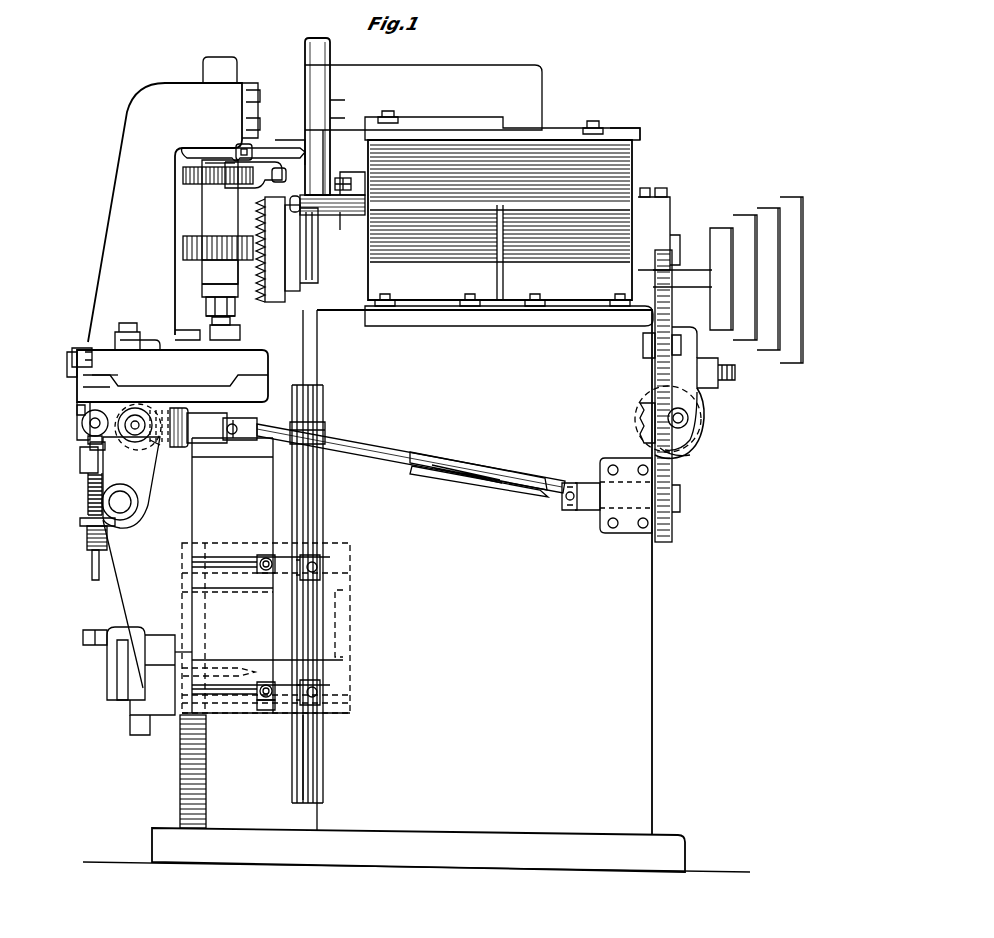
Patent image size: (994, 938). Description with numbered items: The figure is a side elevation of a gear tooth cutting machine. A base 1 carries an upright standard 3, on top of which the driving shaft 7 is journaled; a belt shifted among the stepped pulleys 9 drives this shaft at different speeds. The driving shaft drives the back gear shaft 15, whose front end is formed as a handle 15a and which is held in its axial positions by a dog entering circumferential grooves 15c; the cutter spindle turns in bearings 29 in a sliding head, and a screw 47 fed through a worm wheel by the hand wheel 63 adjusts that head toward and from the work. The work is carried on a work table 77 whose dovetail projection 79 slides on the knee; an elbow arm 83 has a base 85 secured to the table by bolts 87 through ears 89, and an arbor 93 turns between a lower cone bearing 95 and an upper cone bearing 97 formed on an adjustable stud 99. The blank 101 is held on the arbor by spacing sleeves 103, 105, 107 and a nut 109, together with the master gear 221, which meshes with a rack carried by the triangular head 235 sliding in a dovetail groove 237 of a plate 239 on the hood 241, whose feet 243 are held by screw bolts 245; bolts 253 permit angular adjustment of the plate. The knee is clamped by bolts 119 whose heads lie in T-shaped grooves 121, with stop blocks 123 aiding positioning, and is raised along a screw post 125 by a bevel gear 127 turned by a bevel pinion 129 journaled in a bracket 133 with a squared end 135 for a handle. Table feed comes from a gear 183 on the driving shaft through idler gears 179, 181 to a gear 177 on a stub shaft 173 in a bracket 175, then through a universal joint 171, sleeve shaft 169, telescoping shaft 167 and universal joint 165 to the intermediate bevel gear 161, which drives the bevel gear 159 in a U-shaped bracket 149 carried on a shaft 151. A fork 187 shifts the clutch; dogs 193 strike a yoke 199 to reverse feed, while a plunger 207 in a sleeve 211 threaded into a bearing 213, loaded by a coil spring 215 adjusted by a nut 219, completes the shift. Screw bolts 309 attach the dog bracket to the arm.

The base 1 is at (668, 842).
The standard 3 is at (652, 742).
The driving shaft 7 is at (688, 278).
The stepped pulleys 9 is at (786, 200).
The back gear shaft 15 is at (287, 249).
The handle 15a is at (296, 216).
The circumferential grooves 15c is at (350, 222).
The bearings 29 is at (345, 190).
The screw 47 is at (735, 373).
The hand wheel 63 is at (706, 432).
The work table 77 is at (97, 358).
The dovetail projection 79 is at (102, 386).
The elbow arm 83 is at (118, 185).
The base 85 is at (172, 348).
The bolts 87 is at (125, 335).
The ears 89 is at (115, 340).
The arbor 93 is at (235, 328).
The cone bearing 95 is at (240, 345).
The cone bearing 97 is at (190, 155).
The stud 99 is at (203, 68).
The blank 101 is at (183, 248).
The spacing sleeve 103 is at (215, 205).
The spacing sleeve 105 is at (210, 272).
The spacing sleeve 107 is at (208, 290).
The nut 109 is at (206, 308).
The bolts 119 is at (326, 430).
The T-shaped grooves 121 is at (222, 452).
The stop blocks 123 is at (265, 702).
The screw post 125 is at (180, 780).
The bevel gear 127 is at (172, 652).
The bevel pinion 129 is at (140, 640).
The bracket 133 is at (112, 684).
The squared end 135 is at (84, 642).
The U-shaped bracket 149 is at (118, 473).
The shaft 151 is at (130, 502).
The bevel gear 159 is at (143, 450).
The intermediate bevel gear 161 is at (140, 410).
The universal joint 165 is at (248, 420).
The shaft 167 is at (380, 462).
The sleeve shaft 169 is at (460, 478).
The universal joint 171 is at (568, 503).
The stub shaft 173 is at (597, 505).
The bracket 175 is at (602, 470).
The gear 177 is at (672, 531).
The idler gear 179 is at (680, 455).
The idler gear 181 is at (682, 347).
The gear 183 is at (668, 240).
The fork 187 is at (82, 428).
The dogs 193 is at (72, 366).
The yoke 199 is at (77, 406).
The plunger 207 is at (90, 446).
The sleeve 211 is at (87, 550).
The bearing 213 is at (80, 529).
The coil spring 215 is at (88, 495).
The nut 219 is at (92, 565).
The master gear 221 is at (183, 176).
The triangular head 235 is at (535, 90).
The dovetail groove 237 is at (450, 122).
The plate 239 is at (622, 137).
The hood 241 is at (632, 155).
The feet 243 is at (410, 300).
The screw bolts 245 is at (382, 297).
The bolts 253 is at (392, 116).
The screw bolts 309 is at (252, 122).